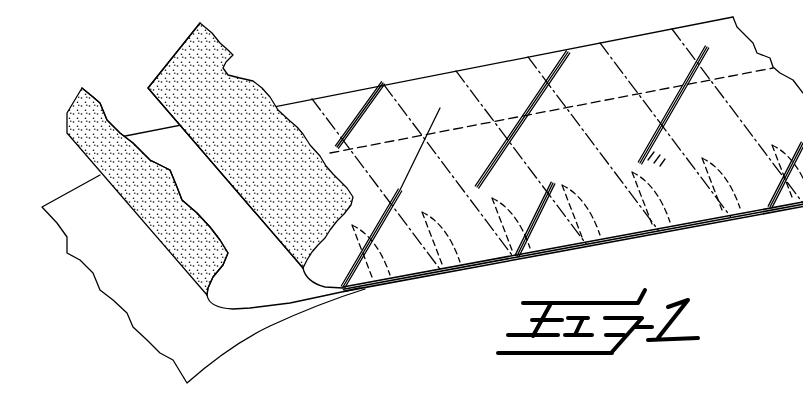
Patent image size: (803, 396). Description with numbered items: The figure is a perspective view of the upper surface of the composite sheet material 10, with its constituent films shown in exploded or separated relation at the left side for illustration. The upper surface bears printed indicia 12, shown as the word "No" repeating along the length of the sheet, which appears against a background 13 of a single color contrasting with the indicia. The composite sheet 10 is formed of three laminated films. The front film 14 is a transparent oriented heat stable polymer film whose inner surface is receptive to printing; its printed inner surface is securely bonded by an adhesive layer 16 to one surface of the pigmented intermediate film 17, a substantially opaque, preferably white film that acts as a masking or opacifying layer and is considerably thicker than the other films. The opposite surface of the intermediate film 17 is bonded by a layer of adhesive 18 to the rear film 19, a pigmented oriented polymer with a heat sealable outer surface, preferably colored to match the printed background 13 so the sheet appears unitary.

The composite sheet material 10 is at (426, 38).
The printed indicia 12 is at (475, 147).
The background 13 is at (463, 216).
The front film 14 is at (165, 36).
The adhesive layer 16 is at (226, 62).
The intermediate film 17 is at (116, 84).
The layer of adhesive 18 is at (78, 142).
The rear film 19 is at (58, 266).